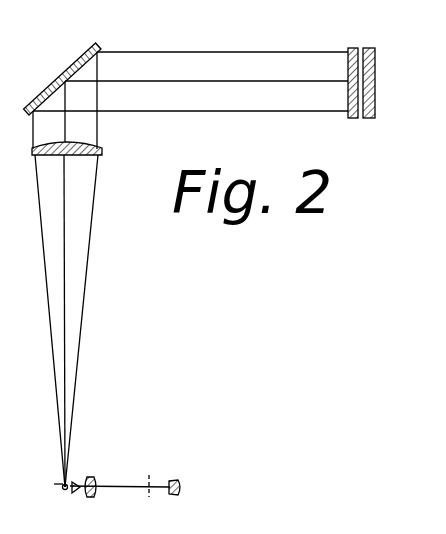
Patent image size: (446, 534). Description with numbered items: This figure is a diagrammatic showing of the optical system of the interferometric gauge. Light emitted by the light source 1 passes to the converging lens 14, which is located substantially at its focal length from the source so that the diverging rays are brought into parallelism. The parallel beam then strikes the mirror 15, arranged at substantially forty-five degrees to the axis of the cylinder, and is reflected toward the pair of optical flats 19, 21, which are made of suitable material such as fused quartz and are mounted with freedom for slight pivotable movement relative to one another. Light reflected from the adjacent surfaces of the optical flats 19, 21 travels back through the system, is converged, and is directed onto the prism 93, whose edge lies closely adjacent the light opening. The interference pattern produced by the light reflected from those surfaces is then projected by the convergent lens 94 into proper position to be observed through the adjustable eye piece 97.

The light source 1 is at (60, 487).
The converging lens 14 is at (88, 147).
The mirror 15 is at (58, 78).
The optical flat 19 is at (351, 48).
The optical flat 21 is at (369, 48).
The prism 93 is at (77, 492).
The convergent lens 94 is at (92, 478).
The eye piece 97 is at (176, 480).